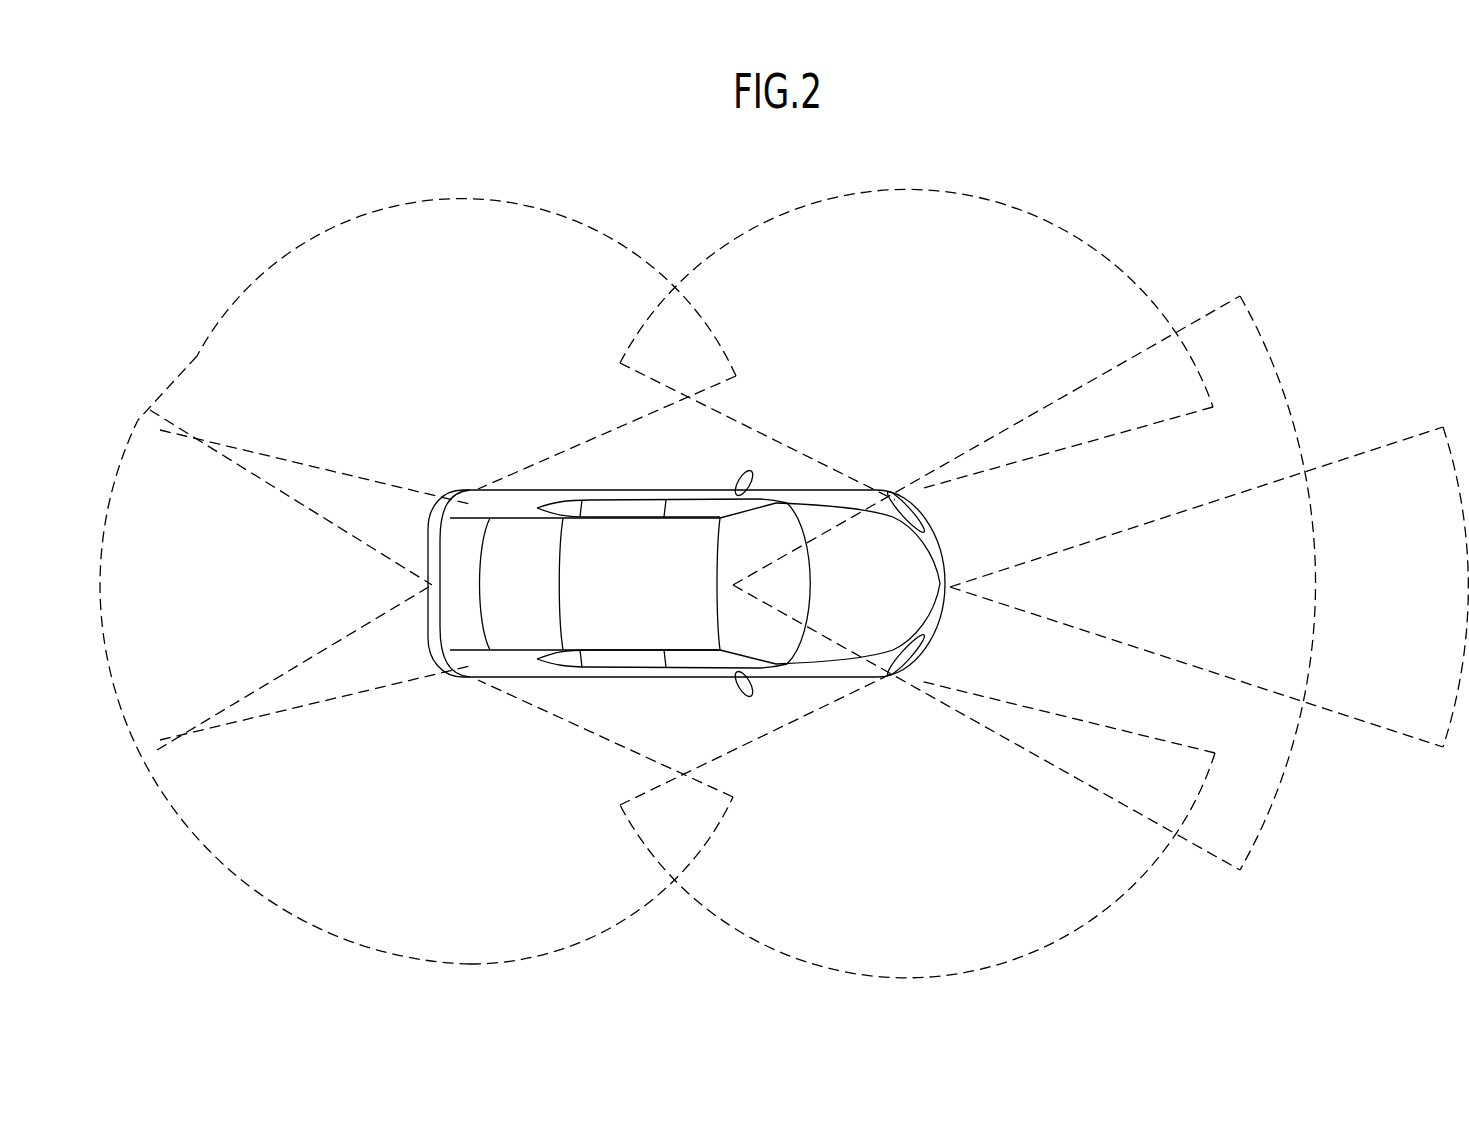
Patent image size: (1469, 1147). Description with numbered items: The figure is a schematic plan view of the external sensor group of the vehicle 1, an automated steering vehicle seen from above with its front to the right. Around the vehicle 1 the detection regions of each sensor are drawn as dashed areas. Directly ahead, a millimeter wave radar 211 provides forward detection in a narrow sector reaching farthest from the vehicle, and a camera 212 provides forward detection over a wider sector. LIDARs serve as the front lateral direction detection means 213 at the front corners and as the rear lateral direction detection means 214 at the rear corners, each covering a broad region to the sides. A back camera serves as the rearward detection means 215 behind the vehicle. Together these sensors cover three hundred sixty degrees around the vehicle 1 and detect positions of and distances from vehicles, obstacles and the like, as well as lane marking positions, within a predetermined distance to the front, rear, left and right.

The vehicle 1 is at (653, 557).
The millimeter wave radar 211 is at (1405, 437).
The camera 212 is at (1272, 356).
The front lateral direction detection means 213 is at (1085, 242).
The rear lateral direction detection means 214 is at (266, 268).
The rearward detection means 215 is at (148, 434).